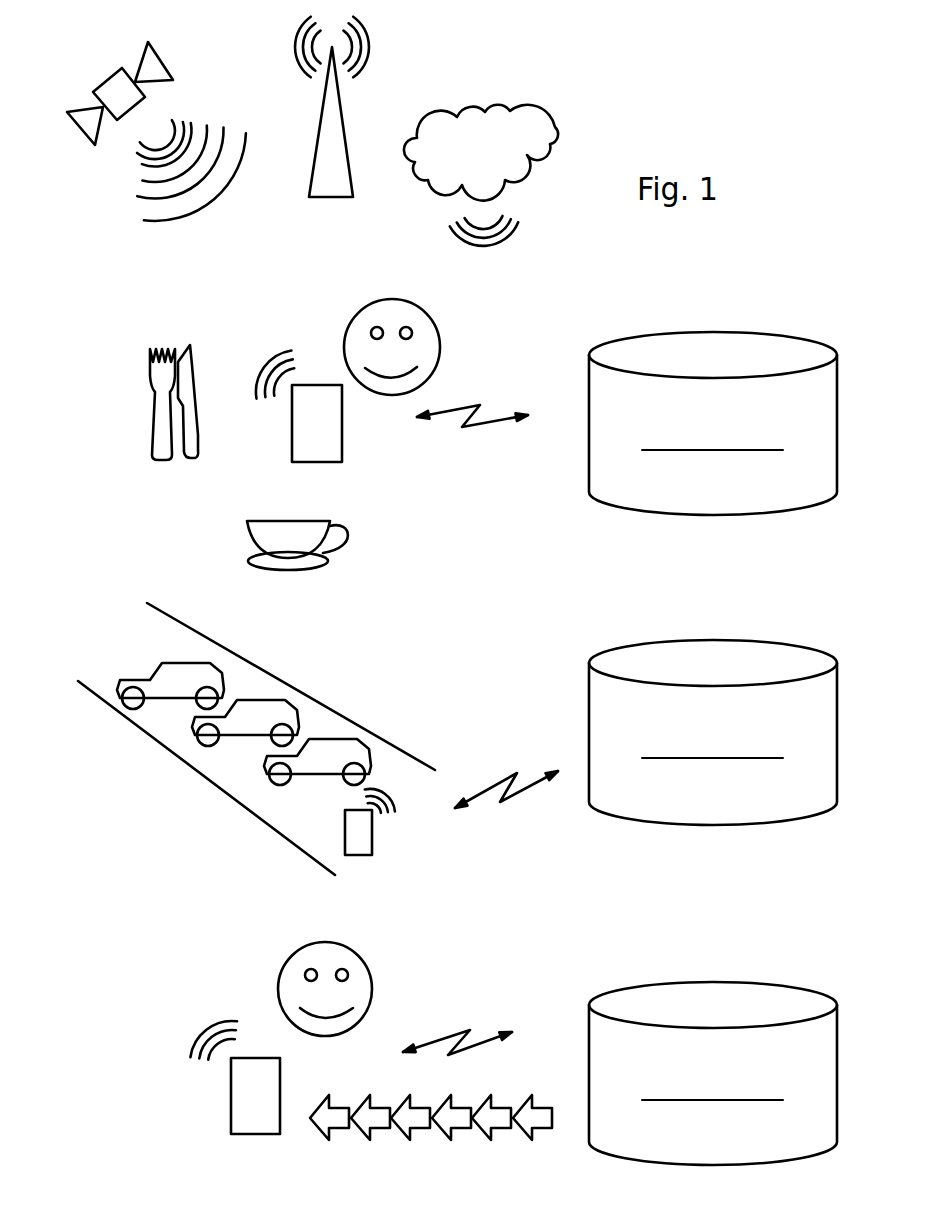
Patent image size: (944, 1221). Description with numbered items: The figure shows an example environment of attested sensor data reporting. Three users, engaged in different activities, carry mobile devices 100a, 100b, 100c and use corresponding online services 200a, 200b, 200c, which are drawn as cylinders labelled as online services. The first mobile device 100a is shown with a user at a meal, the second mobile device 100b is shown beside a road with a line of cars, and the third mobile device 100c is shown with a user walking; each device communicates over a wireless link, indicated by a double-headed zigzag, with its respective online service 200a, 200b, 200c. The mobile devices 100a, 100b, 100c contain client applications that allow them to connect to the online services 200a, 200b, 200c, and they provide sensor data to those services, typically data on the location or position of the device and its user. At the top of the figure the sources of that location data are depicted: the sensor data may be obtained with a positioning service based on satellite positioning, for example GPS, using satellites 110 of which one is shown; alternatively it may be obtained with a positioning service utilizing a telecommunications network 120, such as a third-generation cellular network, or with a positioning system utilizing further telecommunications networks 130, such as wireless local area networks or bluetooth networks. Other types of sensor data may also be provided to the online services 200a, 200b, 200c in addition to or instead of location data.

The satellite 110 is at (112, 152).
The telecommunications network 120 is at (307, 172).
The further telecommunications network 130 is at (437, 195).
The mobile device 100a is at (353, 427).
The mobile device 100b is at (378, 835).
The mobile device 100c is at (218, 1101).
The online service 200a is at (773, 316).
The online service 200b is at (773, 618).
The online service 200c is at (773, 958).